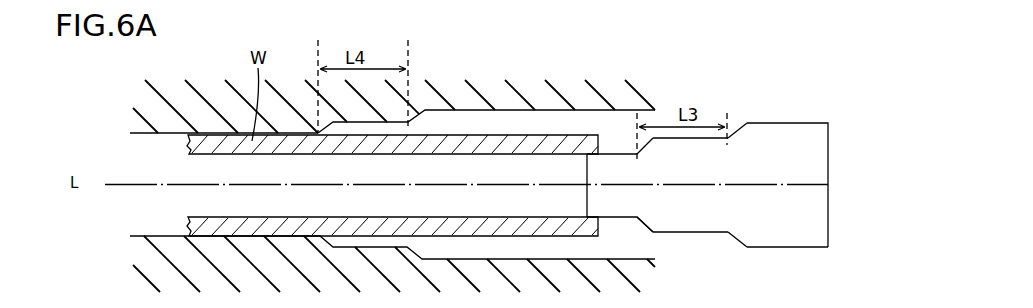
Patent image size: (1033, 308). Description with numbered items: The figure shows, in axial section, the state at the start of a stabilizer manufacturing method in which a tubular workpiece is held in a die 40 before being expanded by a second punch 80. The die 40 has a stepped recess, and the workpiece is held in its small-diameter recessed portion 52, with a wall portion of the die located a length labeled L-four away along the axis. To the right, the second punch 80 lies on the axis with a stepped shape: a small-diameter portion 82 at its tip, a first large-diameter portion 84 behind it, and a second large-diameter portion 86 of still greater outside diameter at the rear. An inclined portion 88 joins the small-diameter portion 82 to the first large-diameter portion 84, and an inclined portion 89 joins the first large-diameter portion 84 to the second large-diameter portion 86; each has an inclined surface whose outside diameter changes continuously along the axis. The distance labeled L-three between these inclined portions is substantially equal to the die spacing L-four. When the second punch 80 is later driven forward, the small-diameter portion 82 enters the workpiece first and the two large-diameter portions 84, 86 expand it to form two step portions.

The die 40 is at (537, 78).
The small-diameter recessed portion 52 is at (152, 135).
The second punch 80 is at (772, 117).
The small-diameter portion 82 is at (607, 167).
The first large-diameter portion 84 is at (706, 232).
The second large-diameter portion 86 is at (799, 243).
The inclined portion 88 is at (648, 234).
The inclined portion 89 is at (738, 244).